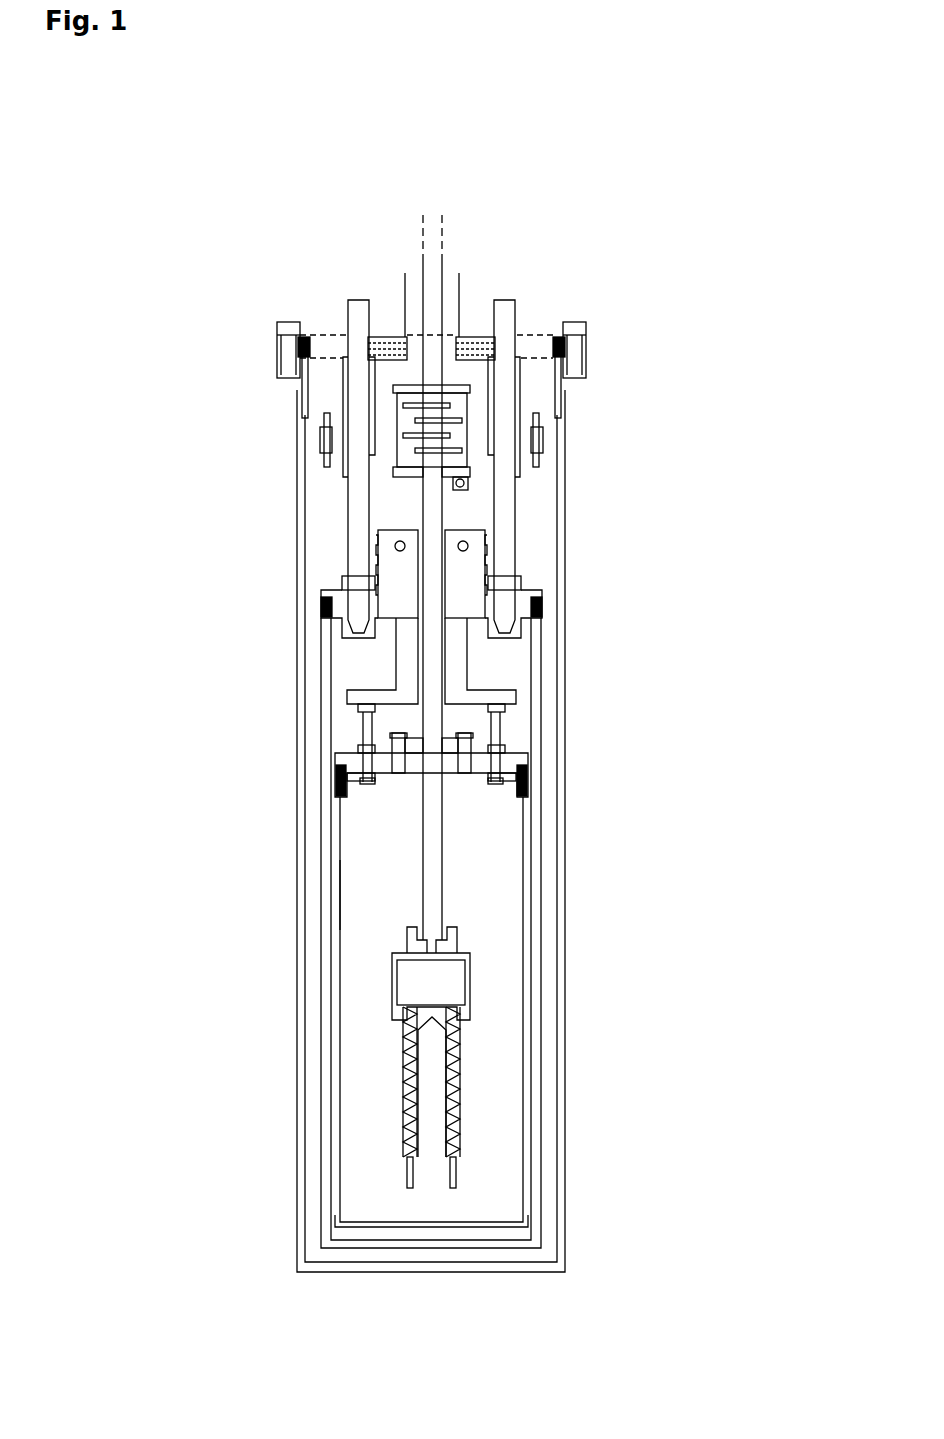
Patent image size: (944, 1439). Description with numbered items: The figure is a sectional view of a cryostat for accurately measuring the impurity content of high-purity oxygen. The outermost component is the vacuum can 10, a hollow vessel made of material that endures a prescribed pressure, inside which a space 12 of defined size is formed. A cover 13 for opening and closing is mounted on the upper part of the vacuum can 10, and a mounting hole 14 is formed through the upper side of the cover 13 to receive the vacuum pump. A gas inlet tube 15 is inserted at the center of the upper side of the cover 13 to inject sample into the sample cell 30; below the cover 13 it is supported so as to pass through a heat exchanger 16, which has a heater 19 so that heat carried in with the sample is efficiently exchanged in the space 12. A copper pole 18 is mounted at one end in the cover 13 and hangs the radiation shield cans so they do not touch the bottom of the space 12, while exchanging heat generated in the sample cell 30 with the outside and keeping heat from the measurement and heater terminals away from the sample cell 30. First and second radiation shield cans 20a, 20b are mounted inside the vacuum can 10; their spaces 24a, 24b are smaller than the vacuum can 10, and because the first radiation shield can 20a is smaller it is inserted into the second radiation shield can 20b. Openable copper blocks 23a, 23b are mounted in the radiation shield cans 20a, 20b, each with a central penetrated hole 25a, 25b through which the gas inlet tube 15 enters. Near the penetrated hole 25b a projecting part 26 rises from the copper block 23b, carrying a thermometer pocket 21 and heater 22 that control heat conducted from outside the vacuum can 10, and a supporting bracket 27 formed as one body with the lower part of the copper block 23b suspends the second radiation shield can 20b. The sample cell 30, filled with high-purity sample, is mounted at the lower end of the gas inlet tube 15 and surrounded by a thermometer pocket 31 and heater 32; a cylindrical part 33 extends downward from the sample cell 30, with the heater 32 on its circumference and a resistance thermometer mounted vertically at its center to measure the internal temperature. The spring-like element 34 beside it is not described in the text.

The vacuum can 10 is at (560, 620).
The space 12 is at (318, 528).
The cover 13 is at (476, 305).
The mounting hole 14 is at (541, 312).
The gas inlet tube 15 is at (437, 257).
The heat exchanger 16 is at (387, 387).
The copper pole 18 is at (508, 393).
The heater 19 is at (392, 417).
The first radiation shield can 20a is at (540, 810).
The second radiation shield can 20b is at (523, 860).
The thermometer pocket 21 is at (398, 548).
The heater 22 is at (487, 527).
The copper block 23a is at (373, 604).
The copper block 23b is at (515, 748).
The space 24a is at (342, 662).
The space 24b is at (357, 890).
The penetrated hole 25a is at (442, 557).
The penetrated hole 25b is at (412, 764).
The projecting part 26 is at (397, 529).
The supporting bracket 27 is at (460, 670).
The sample cell 30 is at (467, 983).
The thermometer pocket 31 is at (433, 1167).
The heater 32 is at (455, 1058).
The cylindrical part 33 is at (460, 1128).
The left spring 34 is at (407, 1083).